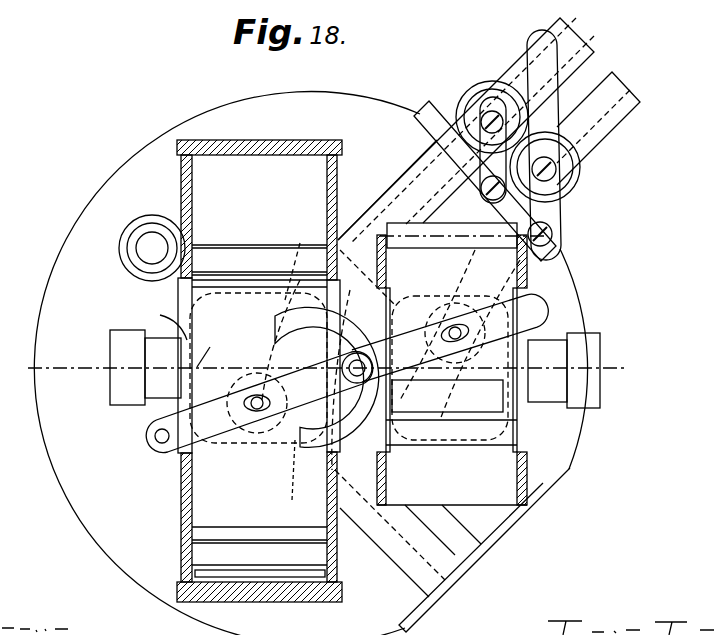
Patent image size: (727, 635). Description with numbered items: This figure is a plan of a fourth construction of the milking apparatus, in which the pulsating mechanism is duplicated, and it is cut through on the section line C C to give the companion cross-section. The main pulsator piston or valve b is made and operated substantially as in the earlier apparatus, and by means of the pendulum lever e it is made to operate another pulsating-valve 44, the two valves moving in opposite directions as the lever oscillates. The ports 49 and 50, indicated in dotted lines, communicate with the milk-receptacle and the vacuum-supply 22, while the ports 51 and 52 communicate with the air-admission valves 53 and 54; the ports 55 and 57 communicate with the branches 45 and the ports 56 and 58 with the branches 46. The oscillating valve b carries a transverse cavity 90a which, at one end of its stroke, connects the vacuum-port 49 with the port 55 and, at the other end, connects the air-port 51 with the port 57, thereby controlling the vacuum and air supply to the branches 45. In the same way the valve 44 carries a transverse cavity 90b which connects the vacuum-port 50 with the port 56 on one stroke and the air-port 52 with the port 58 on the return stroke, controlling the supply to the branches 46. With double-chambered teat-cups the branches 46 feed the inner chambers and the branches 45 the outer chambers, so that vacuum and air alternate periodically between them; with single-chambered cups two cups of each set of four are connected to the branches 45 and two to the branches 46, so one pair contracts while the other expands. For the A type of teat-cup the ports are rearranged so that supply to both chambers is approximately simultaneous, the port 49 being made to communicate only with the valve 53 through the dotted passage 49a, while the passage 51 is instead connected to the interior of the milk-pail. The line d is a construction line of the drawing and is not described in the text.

The vacuum-supply 22 is at (150, 250).
The main pulsator piston or valve b is at (212, 262).
The port 55 is at (299, 259).
The guide line d is at (387, 190).
The branches 45 is at (487, 307).
The branches 46 is at (487, 220).
The port 56 is at (461, 337).
The port 58 is at (452, 478).
The pulsating-valve 44 is at (447, 387).
The air-port 51 is at (213, 440).
The vacuum-port 50 is at (547, 303).
The transverse cavity 90a is at (248, 440).
The transverse cavity 90b is at (472, 299).
The pendulum lever e is at (327, 377).
The vacuum-port 49 is at (216, 348).
The passage 49a is at (155, 317).
The port 57 is at (291, 483).
The air-admission valve 53 is at (127, 397).
The air-admission valve 54 is at (590, 350).
The air-port 52 is at (500, 430).
The section line C C is at (329, 367).